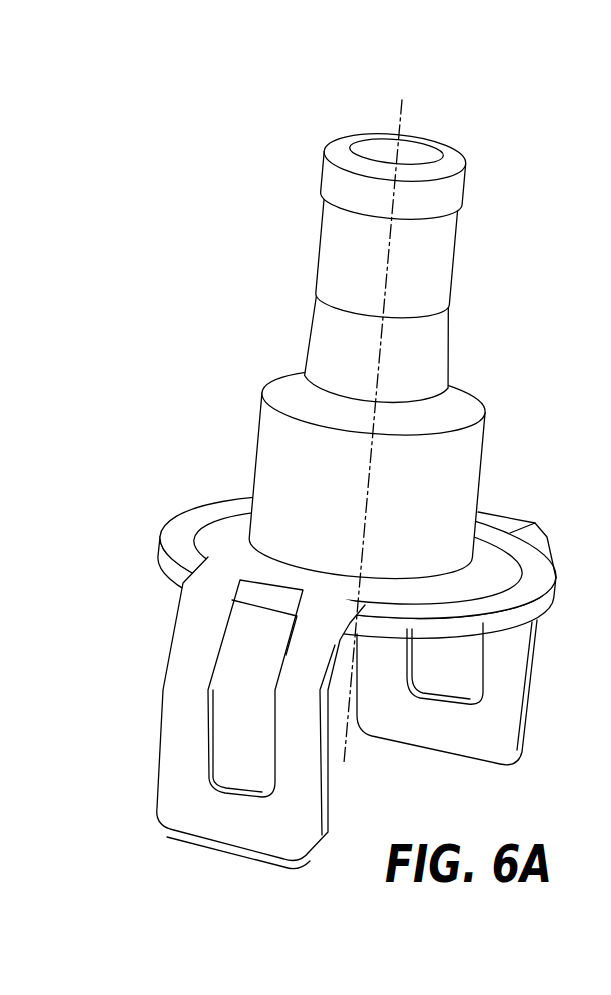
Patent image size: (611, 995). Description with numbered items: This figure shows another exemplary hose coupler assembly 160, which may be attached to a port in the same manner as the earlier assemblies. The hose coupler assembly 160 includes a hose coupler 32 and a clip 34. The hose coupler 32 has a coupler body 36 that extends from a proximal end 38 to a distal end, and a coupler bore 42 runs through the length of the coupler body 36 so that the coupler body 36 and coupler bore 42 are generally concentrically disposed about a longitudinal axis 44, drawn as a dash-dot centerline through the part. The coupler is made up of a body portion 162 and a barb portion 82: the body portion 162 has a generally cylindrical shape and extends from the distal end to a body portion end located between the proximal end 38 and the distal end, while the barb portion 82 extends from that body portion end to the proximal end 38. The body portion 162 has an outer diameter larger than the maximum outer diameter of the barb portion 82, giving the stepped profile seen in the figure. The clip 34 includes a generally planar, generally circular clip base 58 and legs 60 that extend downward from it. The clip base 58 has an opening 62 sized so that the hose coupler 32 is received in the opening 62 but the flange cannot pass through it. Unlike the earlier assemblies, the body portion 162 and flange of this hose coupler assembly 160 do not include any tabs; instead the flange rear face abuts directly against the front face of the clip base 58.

The hose coupler assembly 160 is at (263, 143).
The coupler body 36 is at (117, 137).
The clip 34 is at (143, 833).
The proximal end 38 is at (426, 162).
The coupler bore 42 is at (382, 148).
The longitudinal axis 44 is at (400, 113).
The hose coupler 32 is at (418, 254).
The barb portion 82 is at (418, 294).
The body portion 162 is at (428, 497).
The clip base 58 is at (493, 540).
The opening 62 is at (290, 562).
The legs 60 is at (225, 822).